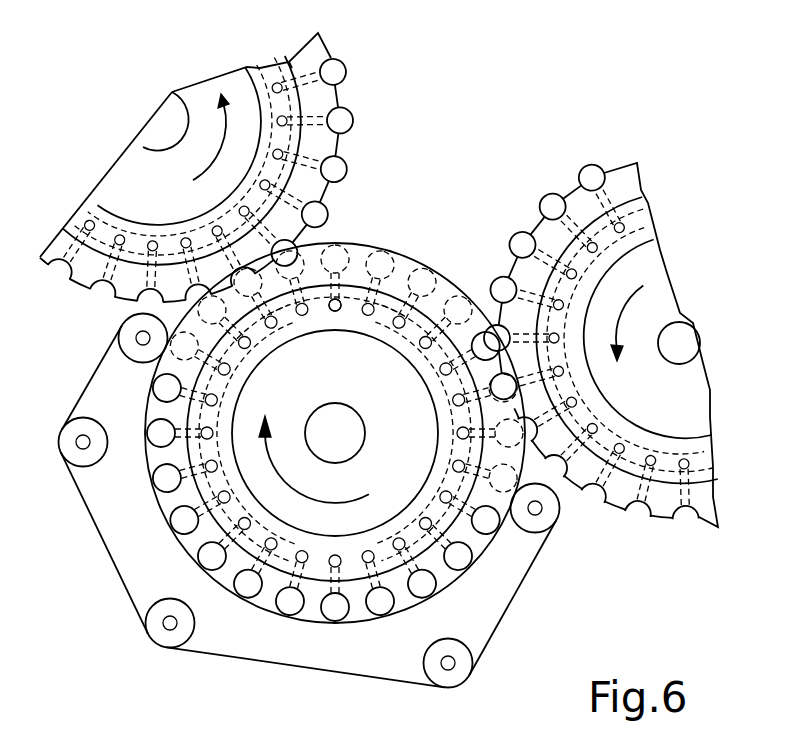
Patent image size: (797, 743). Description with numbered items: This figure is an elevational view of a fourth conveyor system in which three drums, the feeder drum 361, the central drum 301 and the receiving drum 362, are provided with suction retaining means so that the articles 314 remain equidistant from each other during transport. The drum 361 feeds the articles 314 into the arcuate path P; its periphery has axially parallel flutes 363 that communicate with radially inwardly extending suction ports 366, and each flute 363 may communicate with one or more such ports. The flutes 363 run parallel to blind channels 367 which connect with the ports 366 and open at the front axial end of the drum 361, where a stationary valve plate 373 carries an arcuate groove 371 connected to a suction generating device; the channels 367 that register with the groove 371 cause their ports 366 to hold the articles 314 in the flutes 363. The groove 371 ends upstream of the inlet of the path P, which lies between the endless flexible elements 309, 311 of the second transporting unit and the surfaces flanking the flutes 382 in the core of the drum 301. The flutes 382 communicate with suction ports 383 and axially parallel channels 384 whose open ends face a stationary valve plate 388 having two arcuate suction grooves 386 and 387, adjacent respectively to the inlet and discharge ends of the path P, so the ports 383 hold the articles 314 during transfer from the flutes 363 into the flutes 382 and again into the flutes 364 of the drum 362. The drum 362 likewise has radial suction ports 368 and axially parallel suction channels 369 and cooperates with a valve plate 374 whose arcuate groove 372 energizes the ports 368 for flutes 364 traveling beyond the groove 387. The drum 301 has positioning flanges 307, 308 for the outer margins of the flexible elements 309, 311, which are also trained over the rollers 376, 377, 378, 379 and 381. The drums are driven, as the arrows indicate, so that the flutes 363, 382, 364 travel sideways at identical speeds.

The drum 301 is at (364, 366).
The flange 307 is at (410, 264).
The flange 308 is at (406, 262).
The endless flexible element 309 is at (240, 663).
The endless flexible element 311 is at (242, 662).
The article 314 is at (518, 232).
The drum 361 is at (693, 416).
The drum 362 is at (133, 163).
The flute 363 is at (684, 540).
The flute 364 is at (75, 272).
The suction port 366 is at (690, 505).
The channel 367 is at (688, 468).
The suction port 368 is at (84, 226).
The suctional channel 369 is at (92, 207).
The arcuate groove 371 is at (645, 227).
The arcuate groove 372 is at (345, 102).
The valve plate 373 is at (660, 532).
The valve plate 374 is at (322, 40).
The roller 376 is at (120, 337).
The roller 377 is at (72, 452).
The roller 378 is at (150, 635).
The roller 379 is at (455, 684).
The roller 381 is at (548, 523).
The flute 382 is at (345, 245).
The suction port 383 is at (370, 252).
The channel 384 is at (420, 232).
The arcuate suction groove 386 is at (462, 418).
The arcuate suction groove 387 is at (255, 373).
The valve plate 388 is at (438, 450).
The arcuate path P is at (408, 610).